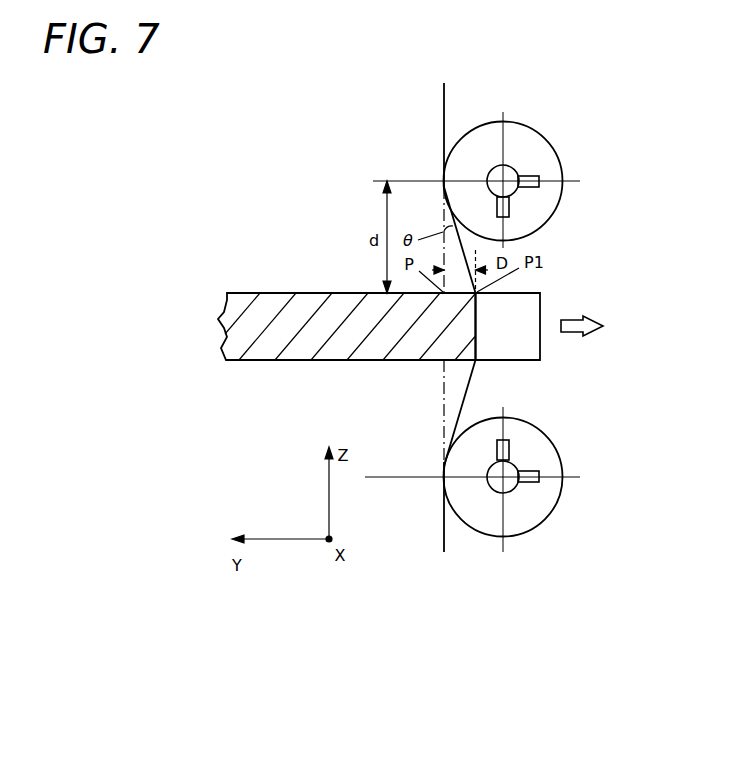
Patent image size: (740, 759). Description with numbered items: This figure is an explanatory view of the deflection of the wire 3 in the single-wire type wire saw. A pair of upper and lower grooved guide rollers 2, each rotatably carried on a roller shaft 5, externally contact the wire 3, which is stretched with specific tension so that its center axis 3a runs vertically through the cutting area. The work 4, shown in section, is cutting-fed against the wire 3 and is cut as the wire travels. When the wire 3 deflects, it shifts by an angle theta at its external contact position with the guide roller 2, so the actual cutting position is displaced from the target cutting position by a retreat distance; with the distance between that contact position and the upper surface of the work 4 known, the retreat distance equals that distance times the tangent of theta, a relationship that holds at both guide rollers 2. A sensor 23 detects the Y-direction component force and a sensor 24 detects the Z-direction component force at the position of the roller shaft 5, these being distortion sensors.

The grooved guide roller 2 is at (538, 146).
The wire 3 is at (442, 95).
The center axis of the wire 3a is at (443, 372).
The work 4 is at (271, 293).
The roller shaft 5 is at (495, 170).
The sensor 23 is at (540, 180).
The sensor 24 is at (510, 210).